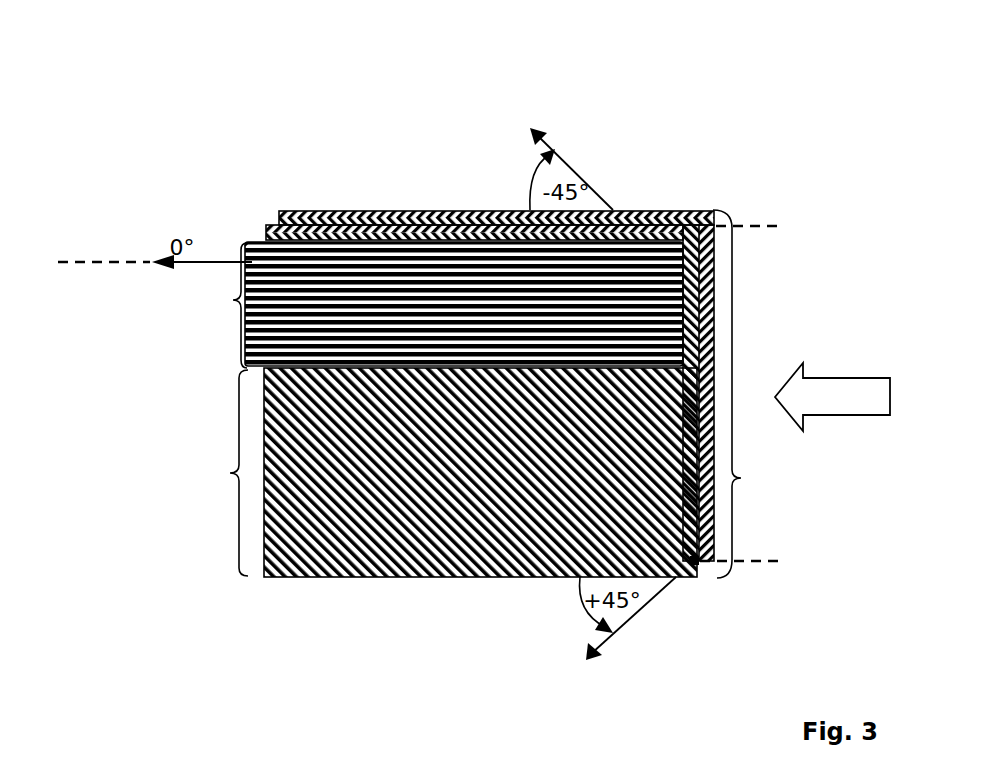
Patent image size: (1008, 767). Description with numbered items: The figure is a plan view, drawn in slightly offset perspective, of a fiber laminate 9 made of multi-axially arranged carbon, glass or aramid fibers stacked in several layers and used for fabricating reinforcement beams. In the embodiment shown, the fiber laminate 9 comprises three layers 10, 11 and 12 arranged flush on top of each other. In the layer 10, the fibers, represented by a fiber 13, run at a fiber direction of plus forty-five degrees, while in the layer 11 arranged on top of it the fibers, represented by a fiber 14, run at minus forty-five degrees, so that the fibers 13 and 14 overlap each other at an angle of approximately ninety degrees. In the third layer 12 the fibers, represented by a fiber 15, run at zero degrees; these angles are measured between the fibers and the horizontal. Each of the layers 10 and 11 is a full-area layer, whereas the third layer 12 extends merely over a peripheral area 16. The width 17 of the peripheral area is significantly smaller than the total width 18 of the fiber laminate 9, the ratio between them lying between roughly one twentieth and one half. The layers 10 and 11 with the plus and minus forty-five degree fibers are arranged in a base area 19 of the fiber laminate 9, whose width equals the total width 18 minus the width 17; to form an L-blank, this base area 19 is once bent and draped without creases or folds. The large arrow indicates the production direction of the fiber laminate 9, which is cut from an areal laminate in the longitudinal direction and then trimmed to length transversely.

The fiber laminate 9 is at (474, 76).
The layer 10 is at (702, 210).
The layer 11 is at (433, 578).
The third layer 12 is at (263, 243).
The fiber 13 is at (703, 567).
The fiber 14 is at (647, 210).
The fiber 15 is at (296, 211).
The peripheral area 16 is at (363, 287).
The width of the peripheral area 17 is at (223, 305).
The total width 18 is at (745, 394).
The base area 19 is at (221, 473).